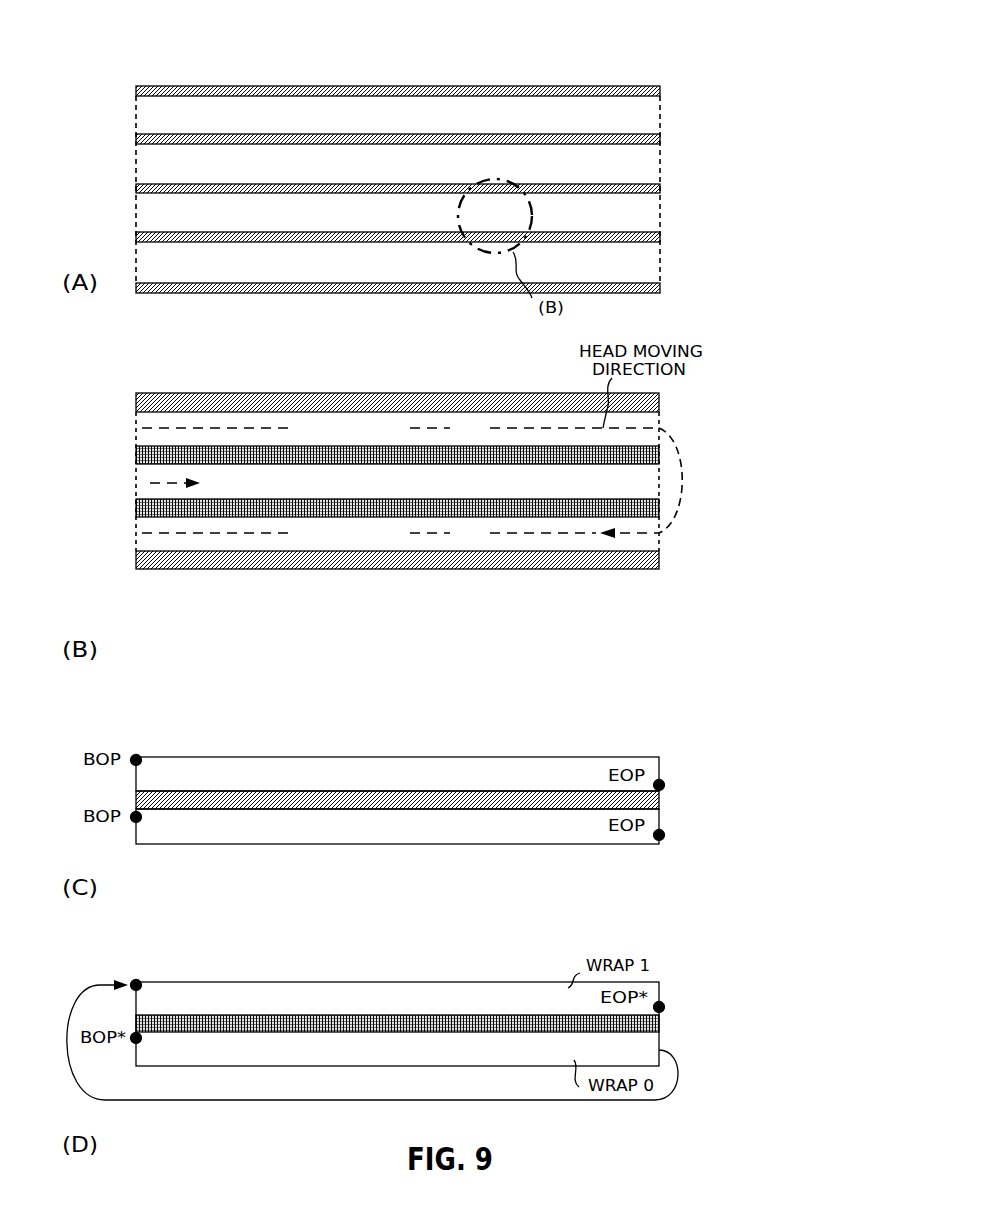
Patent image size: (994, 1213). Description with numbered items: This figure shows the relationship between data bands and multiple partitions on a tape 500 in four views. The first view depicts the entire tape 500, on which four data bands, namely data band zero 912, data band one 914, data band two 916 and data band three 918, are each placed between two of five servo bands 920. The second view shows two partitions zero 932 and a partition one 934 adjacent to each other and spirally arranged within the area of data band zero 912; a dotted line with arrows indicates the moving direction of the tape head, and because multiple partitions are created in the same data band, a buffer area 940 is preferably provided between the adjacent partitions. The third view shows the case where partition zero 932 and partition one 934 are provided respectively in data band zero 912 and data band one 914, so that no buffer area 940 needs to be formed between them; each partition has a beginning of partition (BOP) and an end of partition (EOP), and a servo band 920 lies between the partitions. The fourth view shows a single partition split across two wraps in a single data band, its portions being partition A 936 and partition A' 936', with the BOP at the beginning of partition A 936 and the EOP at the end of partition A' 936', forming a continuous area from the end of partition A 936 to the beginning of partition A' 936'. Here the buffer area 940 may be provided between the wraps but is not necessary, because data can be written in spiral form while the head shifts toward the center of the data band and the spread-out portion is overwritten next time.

The tape 500 is at (586, 66).
The servo band 920 is at (136, 91).
The data band #3 918 is at (670, 134).
The data band #1 914 is at (670, 184).
The data band #0 912 is at (670, 233).
The data band #2 916 is at (670, 284).
The partition 0 932 is at (488, 438).
The partition 1 934 is at (488, 493).
The buffer area 940 is at (668, 1023).
The partition A 936 is at (392, 1051).
The partition A' 936' is at (392, 999).